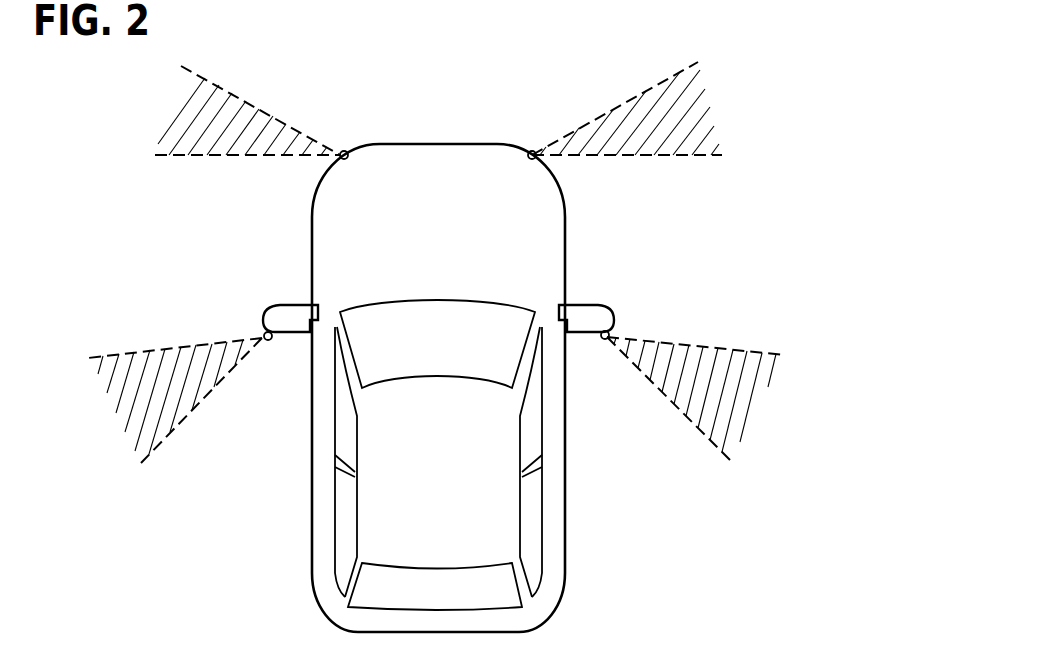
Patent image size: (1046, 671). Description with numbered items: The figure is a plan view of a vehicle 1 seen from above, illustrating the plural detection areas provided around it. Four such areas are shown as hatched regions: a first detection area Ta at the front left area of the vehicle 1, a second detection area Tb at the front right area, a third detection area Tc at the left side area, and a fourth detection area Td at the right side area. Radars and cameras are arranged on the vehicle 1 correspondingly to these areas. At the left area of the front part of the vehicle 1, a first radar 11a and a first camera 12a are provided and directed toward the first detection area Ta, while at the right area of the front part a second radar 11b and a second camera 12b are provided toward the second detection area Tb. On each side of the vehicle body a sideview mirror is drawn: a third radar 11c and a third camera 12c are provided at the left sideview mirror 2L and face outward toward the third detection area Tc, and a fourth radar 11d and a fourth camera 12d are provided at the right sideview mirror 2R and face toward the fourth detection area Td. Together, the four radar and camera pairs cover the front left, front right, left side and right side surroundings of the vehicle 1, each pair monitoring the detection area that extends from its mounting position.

The vehicle 1 is at (432, 144).
The left sideview mirror 2L is at (288, 305).
The right sideview mirror 2R is at (592, 305).
The first radar 11a is at (337, 109).
The first camera 12a is at (345, 151).
The second radar 11b is at (549, 109).
The second camera 12b is at (533, 151).
The third radar 11c is at (177, 309).
The third camera 12c is at (266, 336).
The fourth radar 11d is at (692, 307).
The fourth camera 12d is at (612, 333).
The first detection area Ta is at (244, 110).
The second detection area Tb is at (633, 108).
The third detection area Tc is at (175, 400).
The fourth detection area Td is at (696, 398).